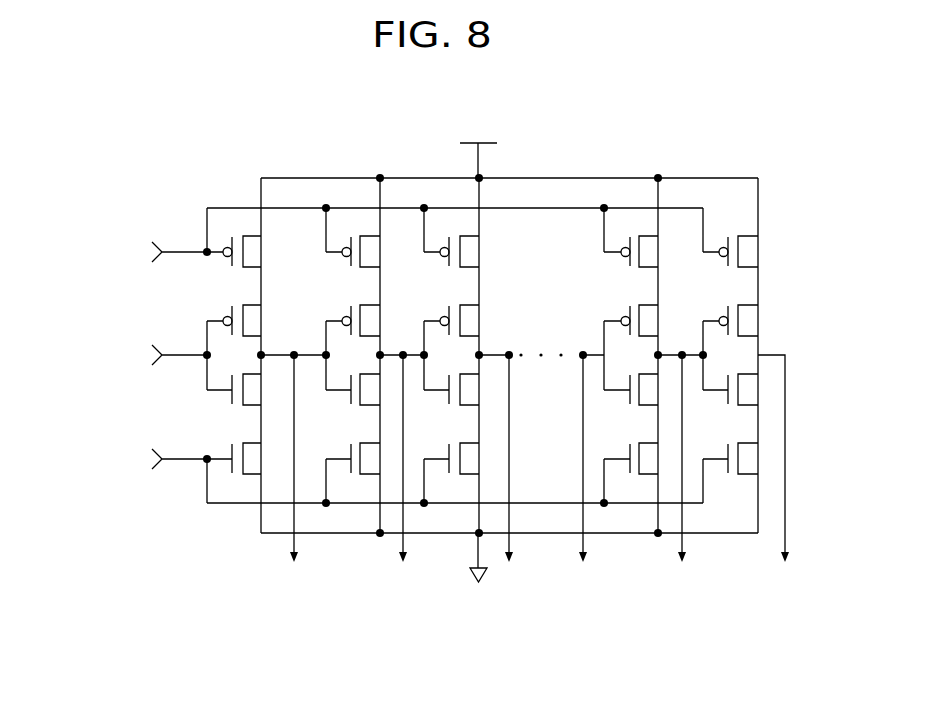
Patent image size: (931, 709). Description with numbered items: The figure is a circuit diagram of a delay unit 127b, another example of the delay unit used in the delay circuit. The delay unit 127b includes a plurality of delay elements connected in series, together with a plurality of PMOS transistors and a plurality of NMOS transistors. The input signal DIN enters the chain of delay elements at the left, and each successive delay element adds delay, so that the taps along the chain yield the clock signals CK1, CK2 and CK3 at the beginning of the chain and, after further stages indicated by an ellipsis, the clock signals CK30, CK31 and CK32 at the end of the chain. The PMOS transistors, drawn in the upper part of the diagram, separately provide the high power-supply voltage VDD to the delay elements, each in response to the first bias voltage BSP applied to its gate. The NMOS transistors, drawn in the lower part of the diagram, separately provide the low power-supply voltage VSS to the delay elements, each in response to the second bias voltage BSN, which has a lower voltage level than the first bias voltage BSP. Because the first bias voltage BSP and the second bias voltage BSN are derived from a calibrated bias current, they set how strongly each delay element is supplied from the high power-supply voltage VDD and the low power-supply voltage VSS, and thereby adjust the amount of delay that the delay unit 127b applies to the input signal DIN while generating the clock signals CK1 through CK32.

The delay unit 127b is at (505, 87).
The high power-supply voltage VDD is at (478, 147).
The low power-supply voltage VSS is at (482, 573).
The first bias voltage BSP is at (159, 254).
The input signal DIN is at (160, 356).
The second bias voltage BSN is at (159, 459).
The clock signal CK1 is at (294, 473).
The clock signal CK2 is at (404, 473).
The clock signal CK3 is at (511, 473).
The clock signal CK30 is at (583, 473).
The clock signal CK31 is at (682, 473).
The clock signal CK32 is at (783, 473).